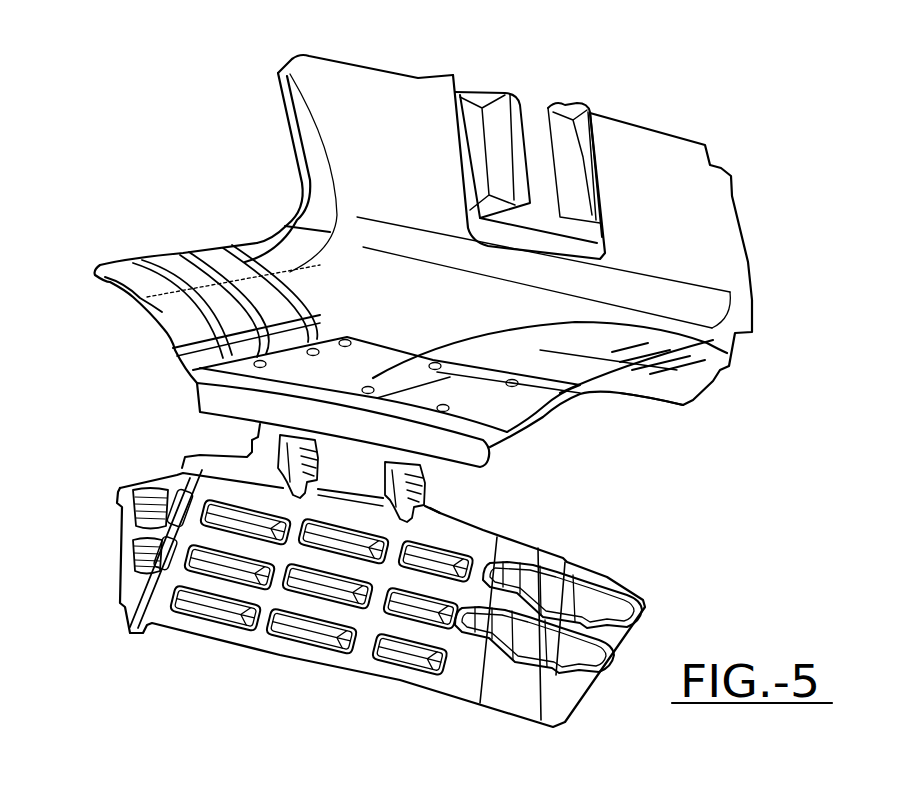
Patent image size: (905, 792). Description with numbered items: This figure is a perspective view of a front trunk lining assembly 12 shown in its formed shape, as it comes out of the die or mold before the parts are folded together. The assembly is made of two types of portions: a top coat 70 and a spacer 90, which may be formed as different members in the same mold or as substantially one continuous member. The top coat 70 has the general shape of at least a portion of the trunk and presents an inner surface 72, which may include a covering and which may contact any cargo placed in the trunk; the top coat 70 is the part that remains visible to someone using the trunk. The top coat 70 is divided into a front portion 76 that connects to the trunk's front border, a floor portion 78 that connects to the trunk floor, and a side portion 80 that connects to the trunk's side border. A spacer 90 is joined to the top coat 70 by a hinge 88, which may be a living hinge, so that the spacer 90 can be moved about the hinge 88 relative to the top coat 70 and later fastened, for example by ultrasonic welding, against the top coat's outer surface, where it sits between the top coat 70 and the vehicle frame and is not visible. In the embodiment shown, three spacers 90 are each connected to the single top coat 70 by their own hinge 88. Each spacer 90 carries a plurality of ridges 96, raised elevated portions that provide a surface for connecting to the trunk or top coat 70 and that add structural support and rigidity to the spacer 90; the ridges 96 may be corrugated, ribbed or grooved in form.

The front trunk lining assembly 12 is at (514, 250).
The top coat 70 is at (760, 262).
The inner surface 72 is at (403, 241).
The front portion 76 is at (340, 112).
The floor portion 78 is at (727, 353).
The side portion 80 is at (165, 312).
The hinge 88 is at (451, 68).
The spacer 90 is at (275, 658).
The ridge 96 is at (437, 557).